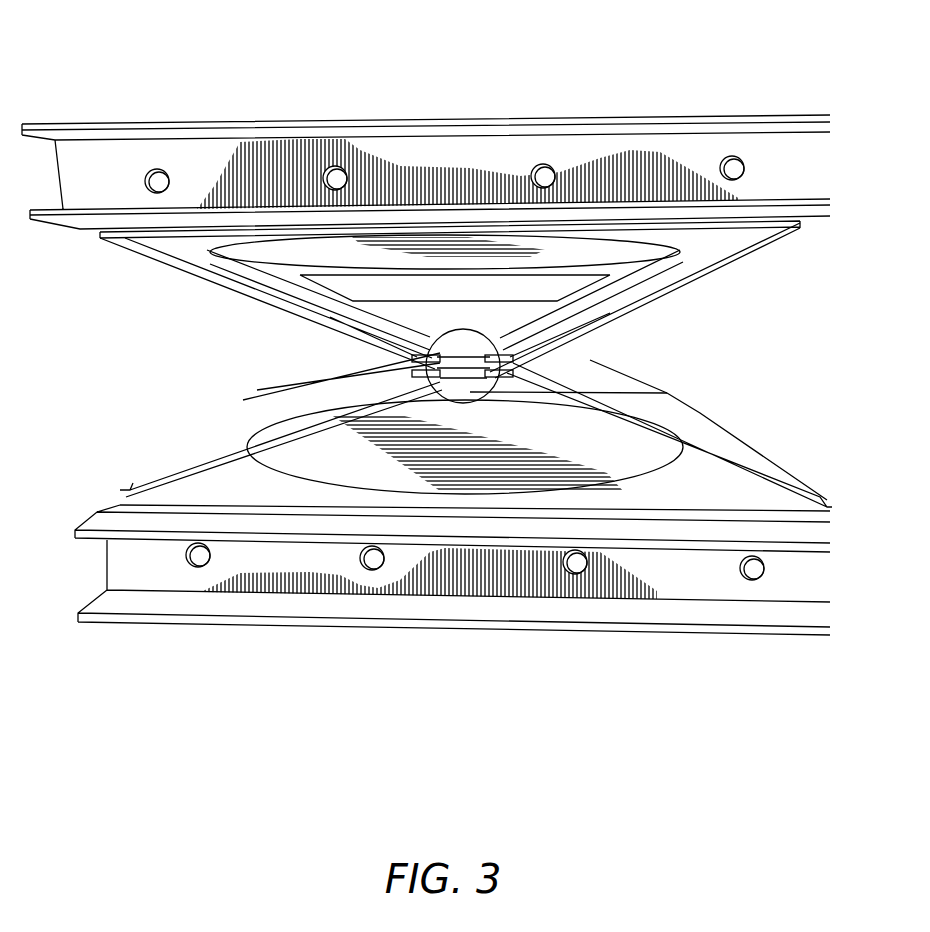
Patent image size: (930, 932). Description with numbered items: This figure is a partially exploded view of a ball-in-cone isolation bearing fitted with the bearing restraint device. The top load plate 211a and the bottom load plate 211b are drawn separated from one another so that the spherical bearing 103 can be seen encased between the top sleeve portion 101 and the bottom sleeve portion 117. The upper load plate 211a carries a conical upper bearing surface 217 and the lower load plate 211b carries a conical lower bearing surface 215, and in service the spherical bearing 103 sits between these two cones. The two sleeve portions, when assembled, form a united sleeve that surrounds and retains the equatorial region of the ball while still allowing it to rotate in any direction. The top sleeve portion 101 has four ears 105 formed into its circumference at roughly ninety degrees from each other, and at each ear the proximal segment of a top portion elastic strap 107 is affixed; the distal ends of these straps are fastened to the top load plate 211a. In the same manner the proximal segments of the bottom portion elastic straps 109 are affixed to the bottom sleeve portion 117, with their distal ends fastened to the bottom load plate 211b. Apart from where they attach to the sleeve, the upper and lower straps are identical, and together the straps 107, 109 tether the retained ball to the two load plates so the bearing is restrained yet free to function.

The top sleeve portion 101 is at (468, 355).
The spherical bearing 103 is at (445, 340).
The ears 105 is at (422, 380).
The top portion elastic strap 107 is at (208, 275).
The bottom portion elastic strap 109 is at (210, 457).
The bottom sleeve portion 117 is at (497, 382).
The top load plate 211a is at (610, 175).
The bottom load plate 211b is at (657, 590).
The conical lower bearing surface 215 is at (440, 460).
The conical upper bearing surface 217 is at (402, 243).